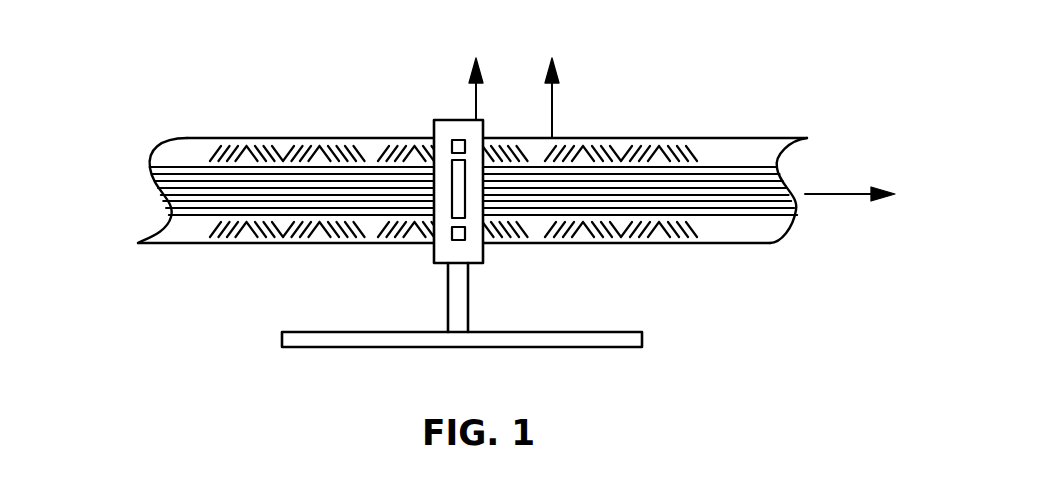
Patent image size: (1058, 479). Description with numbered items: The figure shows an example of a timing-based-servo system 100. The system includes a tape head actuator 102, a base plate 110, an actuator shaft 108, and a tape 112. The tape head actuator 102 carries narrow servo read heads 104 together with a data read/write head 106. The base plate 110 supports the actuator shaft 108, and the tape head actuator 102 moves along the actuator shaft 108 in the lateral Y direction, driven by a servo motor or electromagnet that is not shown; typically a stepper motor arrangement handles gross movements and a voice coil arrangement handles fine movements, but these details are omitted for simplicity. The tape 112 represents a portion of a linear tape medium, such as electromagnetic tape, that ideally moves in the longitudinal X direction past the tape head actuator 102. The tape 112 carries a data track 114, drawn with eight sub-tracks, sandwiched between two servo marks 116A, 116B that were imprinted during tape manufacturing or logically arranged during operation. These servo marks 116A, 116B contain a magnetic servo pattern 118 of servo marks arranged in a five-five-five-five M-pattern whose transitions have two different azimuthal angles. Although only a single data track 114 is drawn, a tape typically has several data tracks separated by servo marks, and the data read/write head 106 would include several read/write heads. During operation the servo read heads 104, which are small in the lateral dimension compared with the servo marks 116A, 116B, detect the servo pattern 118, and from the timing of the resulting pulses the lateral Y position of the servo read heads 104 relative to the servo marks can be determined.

The timing-based-servo system 100 is at (735, 77).
The tape head actuator 102 is at (443, 119).
The narrow servo read heads 104 is at (452, 147).
The data read/write head 106 is at (465, 193).
The actuator shaft 108 is at (470, 293).
The base plate 110 is at (302, 332).
The tape 112 is at (307, 137).
The data track 114 is at (122, 166).
The servo mark 116A is at (121, 148).
The servo mark 116B is at (121, 223).
The magnetic servo pattern 118 is at (213, 235).